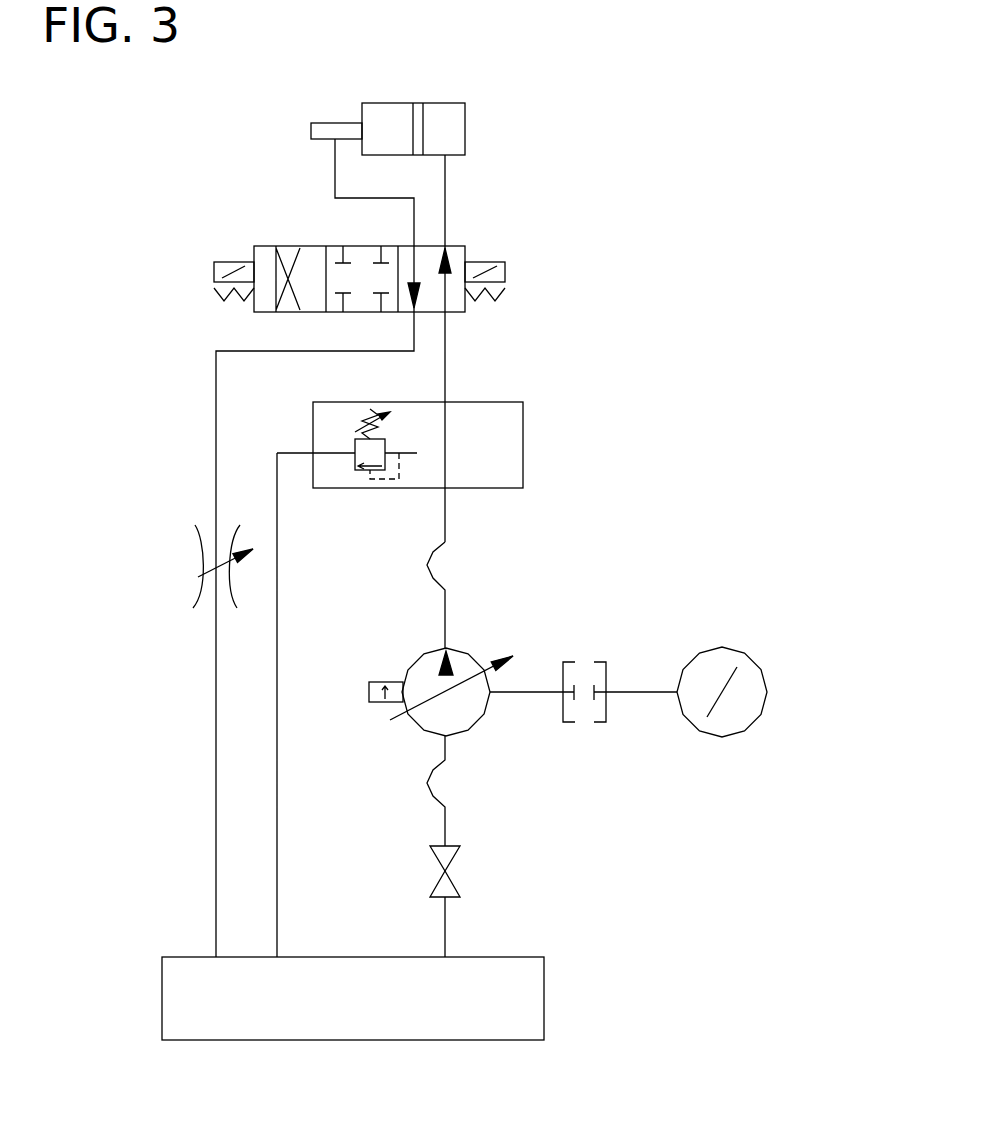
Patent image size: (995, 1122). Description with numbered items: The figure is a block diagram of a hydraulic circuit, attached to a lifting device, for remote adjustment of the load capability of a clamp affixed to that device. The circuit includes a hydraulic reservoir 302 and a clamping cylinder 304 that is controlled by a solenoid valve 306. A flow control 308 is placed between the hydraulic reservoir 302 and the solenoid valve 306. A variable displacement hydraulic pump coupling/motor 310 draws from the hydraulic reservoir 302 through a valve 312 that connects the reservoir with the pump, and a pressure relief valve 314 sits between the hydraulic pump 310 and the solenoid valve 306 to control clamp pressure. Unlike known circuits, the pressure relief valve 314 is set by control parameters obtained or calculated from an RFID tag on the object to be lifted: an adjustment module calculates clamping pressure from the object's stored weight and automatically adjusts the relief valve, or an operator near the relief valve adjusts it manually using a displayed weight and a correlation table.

The hydraulic reservoir 302 is at (544, 997).
The clamping cylinder 304 is at (465, 110).
The solenoid valve 306 is at (465, 246).
The flow control 308 is at (195, 543).
The variable displacement hydraulic pump coupling/motor 310 is at (767, 692).
The valve 312 is at (455, 882).
The pressure relief valve 314 is at (523, 442).